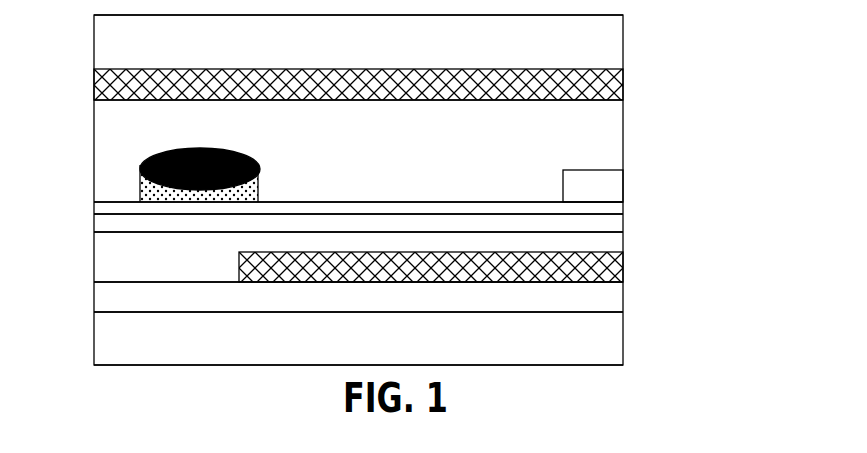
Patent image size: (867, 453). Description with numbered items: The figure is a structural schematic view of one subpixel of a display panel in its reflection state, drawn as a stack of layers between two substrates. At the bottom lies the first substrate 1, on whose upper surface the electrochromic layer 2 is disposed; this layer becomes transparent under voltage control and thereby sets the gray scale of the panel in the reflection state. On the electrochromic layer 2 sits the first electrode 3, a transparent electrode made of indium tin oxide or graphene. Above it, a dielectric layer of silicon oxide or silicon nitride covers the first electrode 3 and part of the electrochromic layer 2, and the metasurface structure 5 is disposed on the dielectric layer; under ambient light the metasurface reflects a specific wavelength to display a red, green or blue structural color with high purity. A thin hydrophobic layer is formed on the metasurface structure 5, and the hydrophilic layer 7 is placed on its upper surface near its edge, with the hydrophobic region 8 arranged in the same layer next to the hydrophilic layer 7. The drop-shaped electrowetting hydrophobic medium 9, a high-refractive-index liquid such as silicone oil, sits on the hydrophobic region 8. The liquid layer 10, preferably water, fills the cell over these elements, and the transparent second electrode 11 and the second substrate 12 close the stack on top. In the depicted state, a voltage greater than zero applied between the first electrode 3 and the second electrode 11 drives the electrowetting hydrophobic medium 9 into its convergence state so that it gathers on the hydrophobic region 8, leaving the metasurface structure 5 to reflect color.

The first substrate 1 is at (623, 337).
The electrochromic layer 2 is at (623, 295).
The first electrode 3 is at (623, 267).
The metasurface structure 5 is at (623, 228).
The hydrophilic layer 7 is at (615, 188).
The hydrophobic region 8 is at (157, 195).
The electrowetting hydrophobic medium 9 is at (143, 163).
The liquid layer 10 is at (610, 133).
The second electrode 11 is at (623, 83).
The second substrate 12 is at (623, 42).